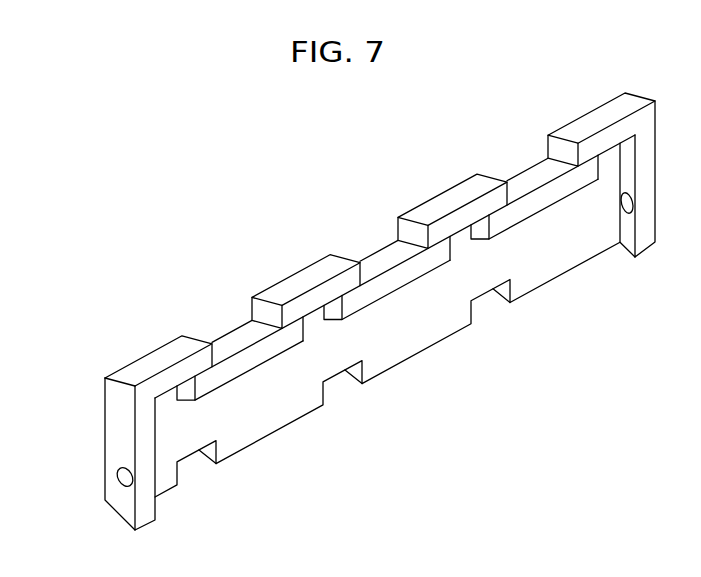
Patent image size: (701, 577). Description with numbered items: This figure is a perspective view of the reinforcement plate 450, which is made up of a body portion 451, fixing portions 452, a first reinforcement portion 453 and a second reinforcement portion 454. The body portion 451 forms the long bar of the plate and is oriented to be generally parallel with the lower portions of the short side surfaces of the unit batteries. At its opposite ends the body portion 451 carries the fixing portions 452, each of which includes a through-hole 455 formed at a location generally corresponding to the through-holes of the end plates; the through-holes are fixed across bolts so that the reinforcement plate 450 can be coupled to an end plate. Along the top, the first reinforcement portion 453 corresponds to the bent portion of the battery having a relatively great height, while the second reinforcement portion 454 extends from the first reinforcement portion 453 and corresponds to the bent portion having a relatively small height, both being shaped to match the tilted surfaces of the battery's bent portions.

The reinforcement plate 450 is at (91, 166).
The body portion 451 is at (262, 425).
The fixing portion 452 is at (113, 423).
The first reinforcement portion 453 is at (147, 358).
The second reinforcement portion 454 is at (232, 333).
The hole 455 is at (124, 484).